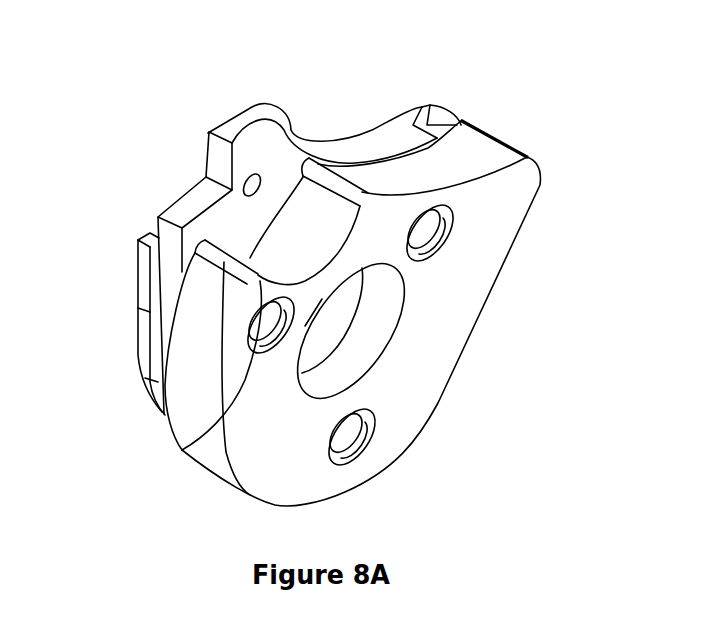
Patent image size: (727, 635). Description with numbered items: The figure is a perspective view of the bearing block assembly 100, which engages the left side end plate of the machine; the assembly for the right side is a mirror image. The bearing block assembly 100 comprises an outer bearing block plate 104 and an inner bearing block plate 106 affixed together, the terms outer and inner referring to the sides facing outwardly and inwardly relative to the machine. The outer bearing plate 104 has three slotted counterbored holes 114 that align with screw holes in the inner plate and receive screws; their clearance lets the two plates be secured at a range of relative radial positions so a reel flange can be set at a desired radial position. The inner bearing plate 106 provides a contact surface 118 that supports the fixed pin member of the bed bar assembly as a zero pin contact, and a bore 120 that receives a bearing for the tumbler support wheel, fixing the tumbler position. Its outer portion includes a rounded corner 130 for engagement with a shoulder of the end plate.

The bearing block assembly 100 is at (151, 134).
The outer bearing block plate 104 is at (458, 337).
The inner bearing block plate 106 is at (163, 272).
The slotted counterbored holes 114 is at (435, 234).
The contact surface 118 is at (192, 214).
The bore 120 is at (254, 180).
The rounded corner 130 is at (437, 140).